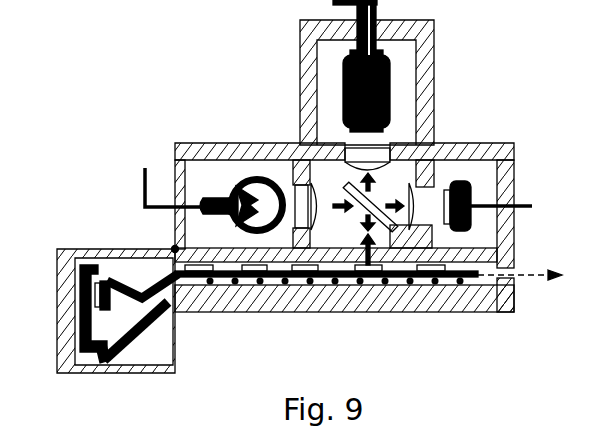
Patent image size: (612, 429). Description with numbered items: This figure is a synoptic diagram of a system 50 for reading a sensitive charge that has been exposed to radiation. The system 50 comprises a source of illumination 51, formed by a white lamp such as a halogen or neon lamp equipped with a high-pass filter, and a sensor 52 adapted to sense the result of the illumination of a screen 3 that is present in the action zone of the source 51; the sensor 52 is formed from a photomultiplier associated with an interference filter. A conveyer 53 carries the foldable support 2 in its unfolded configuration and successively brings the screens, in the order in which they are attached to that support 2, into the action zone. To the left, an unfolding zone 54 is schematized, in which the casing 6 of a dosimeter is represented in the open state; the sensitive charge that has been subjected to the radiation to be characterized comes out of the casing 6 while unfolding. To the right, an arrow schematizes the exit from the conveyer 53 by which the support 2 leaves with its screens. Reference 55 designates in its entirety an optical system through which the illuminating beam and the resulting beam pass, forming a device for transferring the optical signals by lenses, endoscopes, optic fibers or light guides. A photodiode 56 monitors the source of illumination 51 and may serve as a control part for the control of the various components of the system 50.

The system 50 is at (379, 157).
The sensor 52 is at (388, 107).
The source of illumination 51 is at (251, 180).
The optical system 55 is at (388, 190).
The photodiode 56 is at (467, 231).
The conveyer 53 is at (455, 282).
The screen 3 is at (240, 274).
The unfolding zone 54 is at (152, 355).
The foldable support 2 is at (78, 293).
The casing 6 is at (120, 355).